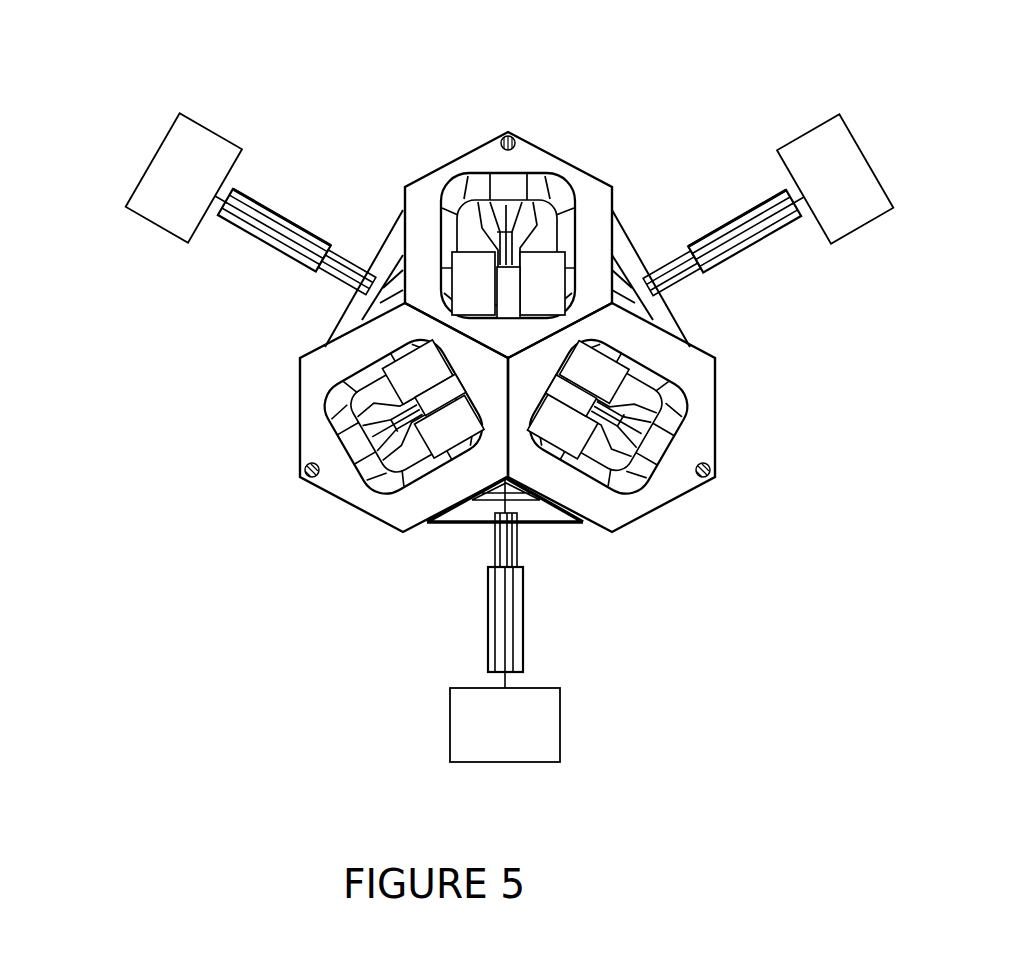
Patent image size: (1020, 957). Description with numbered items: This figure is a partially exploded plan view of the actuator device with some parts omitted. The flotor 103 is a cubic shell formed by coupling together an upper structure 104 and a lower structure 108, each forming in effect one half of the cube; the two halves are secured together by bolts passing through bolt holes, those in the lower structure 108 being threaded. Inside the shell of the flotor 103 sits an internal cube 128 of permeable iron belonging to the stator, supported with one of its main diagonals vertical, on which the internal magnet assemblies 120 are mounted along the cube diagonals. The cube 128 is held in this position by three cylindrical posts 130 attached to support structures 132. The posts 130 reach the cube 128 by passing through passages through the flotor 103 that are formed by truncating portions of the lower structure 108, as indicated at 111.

The flotor 103 is at (563, 160).
The upper structure 104 is at (580, 192).
The lower structure 108 is at (355, 315).
The truncation passages 111 is at (455, 527).
The internal magnet assemblies 120 is at (597, 373).
The internal cube 128 is at (568, 397).
The cylindrical posts 130 is at (737, 257).
The support structures 132 is at (162, 195).